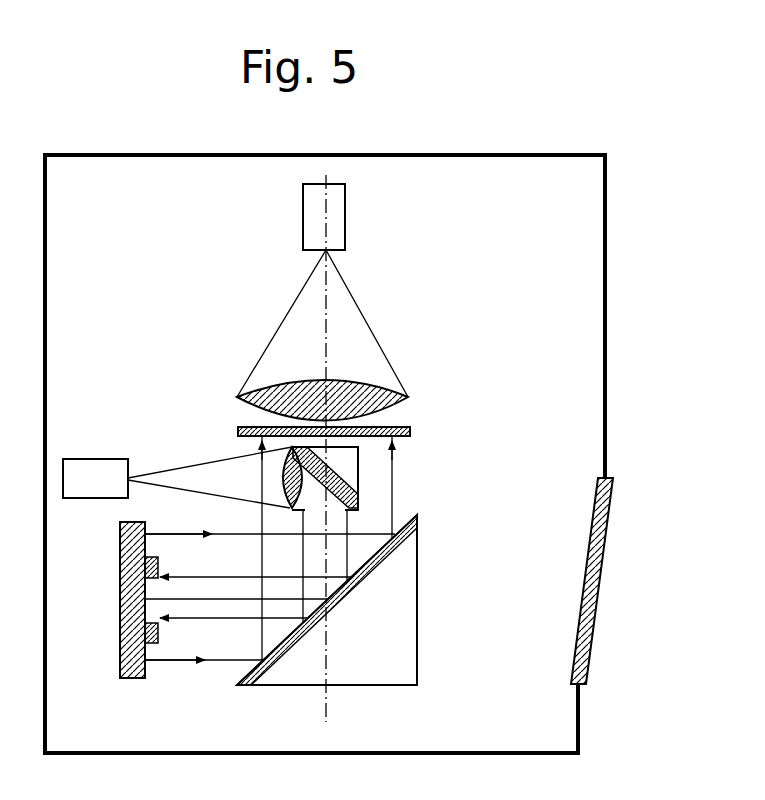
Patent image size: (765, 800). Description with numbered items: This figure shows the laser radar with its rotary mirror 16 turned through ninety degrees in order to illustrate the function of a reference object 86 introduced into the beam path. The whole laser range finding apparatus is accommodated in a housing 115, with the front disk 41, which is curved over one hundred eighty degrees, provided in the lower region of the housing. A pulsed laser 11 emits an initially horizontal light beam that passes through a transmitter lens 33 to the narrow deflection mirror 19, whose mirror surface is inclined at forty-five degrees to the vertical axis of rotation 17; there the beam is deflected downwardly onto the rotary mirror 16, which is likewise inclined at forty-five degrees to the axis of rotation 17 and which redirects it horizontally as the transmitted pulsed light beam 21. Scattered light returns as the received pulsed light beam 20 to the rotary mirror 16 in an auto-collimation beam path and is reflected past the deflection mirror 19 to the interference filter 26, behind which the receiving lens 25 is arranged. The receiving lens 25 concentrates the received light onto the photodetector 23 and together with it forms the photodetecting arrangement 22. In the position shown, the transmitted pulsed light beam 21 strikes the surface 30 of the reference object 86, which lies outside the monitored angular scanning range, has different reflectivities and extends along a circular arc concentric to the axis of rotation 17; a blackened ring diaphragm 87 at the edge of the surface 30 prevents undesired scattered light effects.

The housing 115 is at (607, 296).
The front disk 41 is at (600, 570).
The axis of rotation 17 is at (330, 700).
The photodetector 23 is at (332, 206).
The photodetecting arrangement 22 is at (409, 345).
The receiving lens 25 is at (272, 376).
The interference filter 26 is at (413, 433).
The deflection mirror 19 is at (360, 478).
The transmitter lens 33 is at (288, 472).
The pulsed laser 11 is at (97, 478).
The surface 30 is at (145, 583).
The blackened ring diaphragm 87 is at (150, 572).
The reference object 86 is at (140, 638).
The transmitted pulsed light beam 21 is at (182, 613).
The received pulsed light beam 20 is at (222, 645).
The rotary mirror 16 is at (390, 567).